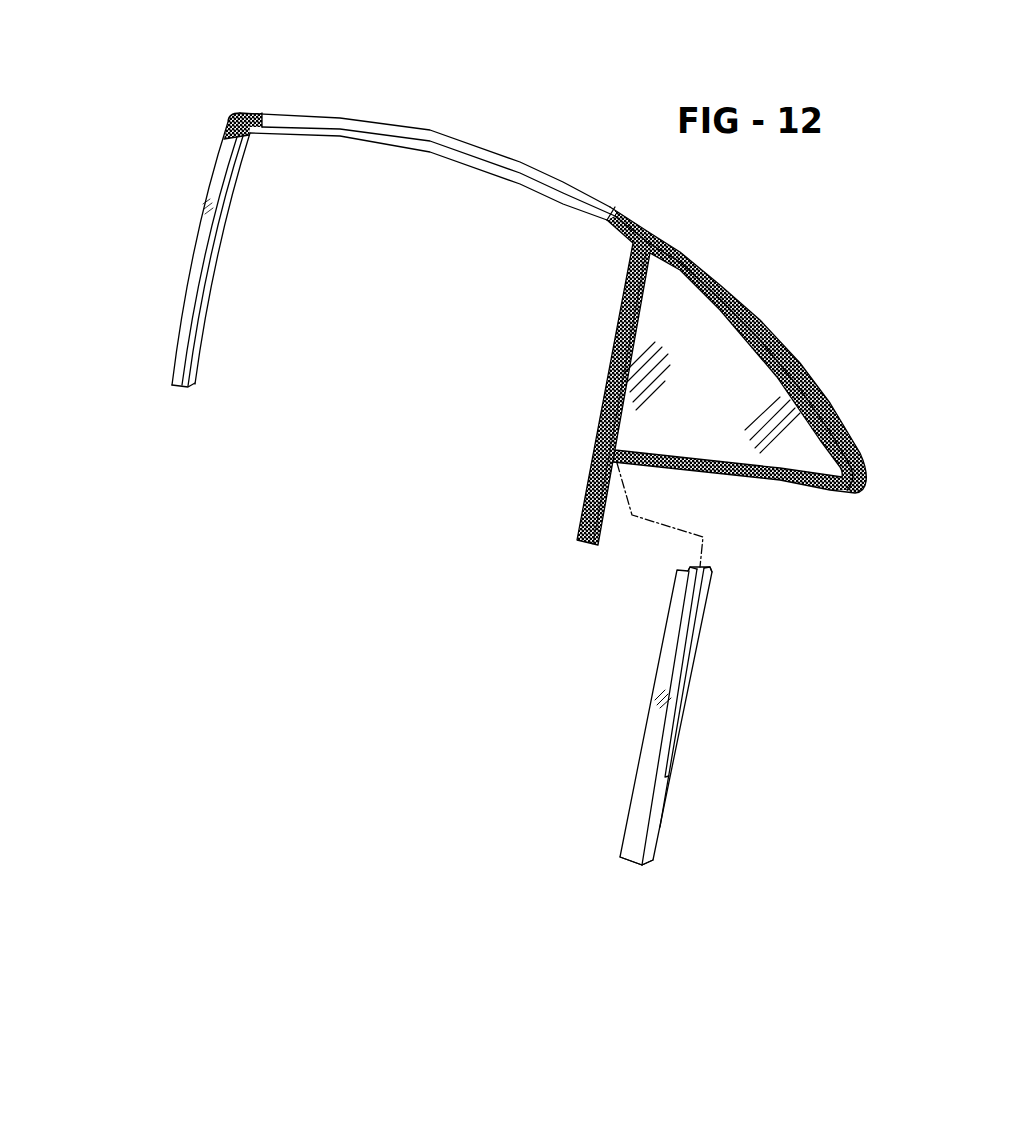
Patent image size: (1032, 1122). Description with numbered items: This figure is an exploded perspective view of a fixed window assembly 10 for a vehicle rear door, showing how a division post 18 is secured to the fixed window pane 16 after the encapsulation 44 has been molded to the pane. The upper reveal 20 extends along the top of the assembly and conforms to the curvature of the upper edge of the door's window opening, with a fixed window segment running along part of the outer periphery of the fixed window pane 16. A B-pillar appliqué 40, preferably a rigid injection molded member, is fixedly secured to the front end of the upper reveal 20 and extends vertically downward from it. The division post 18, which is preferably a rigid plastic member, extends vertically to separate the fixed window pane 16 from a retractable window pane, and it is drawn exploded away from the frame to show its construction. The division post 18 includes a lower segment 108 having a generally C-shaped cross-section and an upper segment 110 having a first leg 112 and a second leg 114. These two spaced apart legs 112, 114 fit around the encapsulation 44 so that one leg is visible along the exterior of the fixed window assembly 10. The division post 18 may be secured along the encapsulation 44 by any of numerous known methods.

The fixed window assembly 10 is at (767, 332).
The fixed window pane 16 is at (720, 416).
The division post 18 is at (645, 722).
The upper reveal 20 is at (440, 128).
The B-pillar appliqué 40 is at (197, 228).
The encapsulation 44 is at (625, 330).
The lower segment 108 is at (662, 828).
The upper segment 110 is at (657, 670).
The first leg 112 is at (688, 568).
The second leg 114 is at (707, 570).